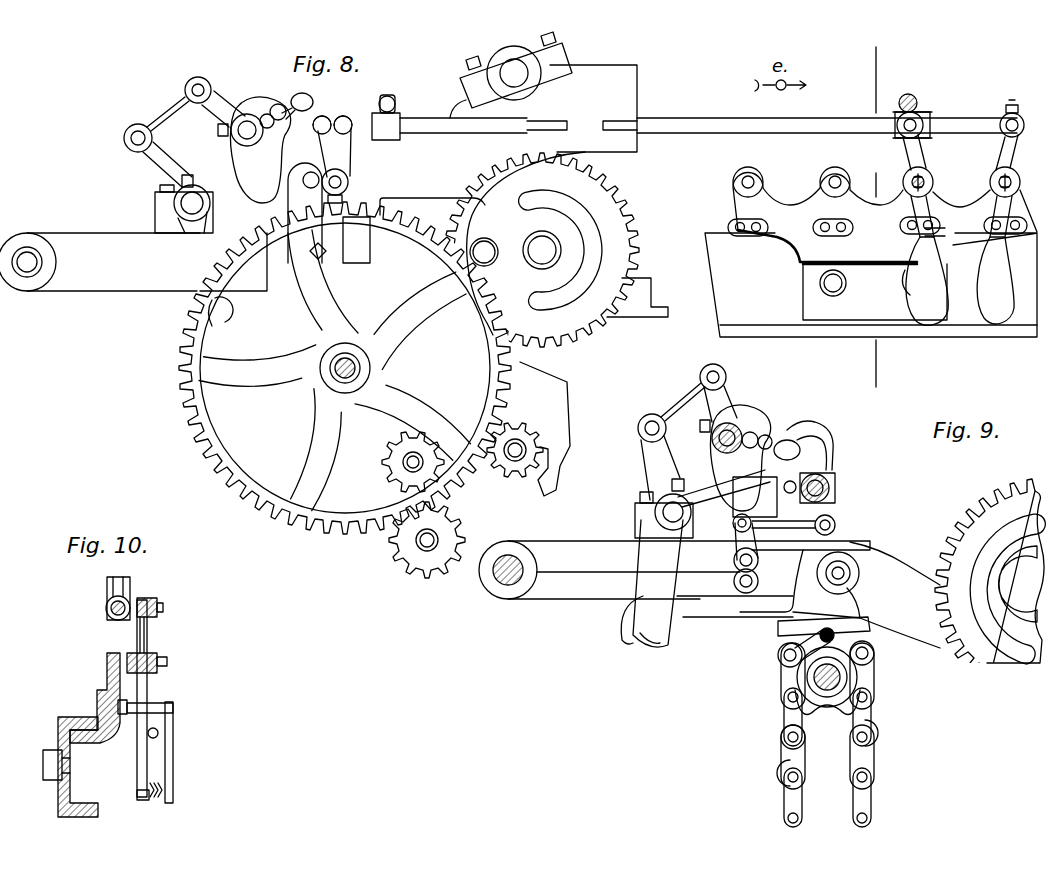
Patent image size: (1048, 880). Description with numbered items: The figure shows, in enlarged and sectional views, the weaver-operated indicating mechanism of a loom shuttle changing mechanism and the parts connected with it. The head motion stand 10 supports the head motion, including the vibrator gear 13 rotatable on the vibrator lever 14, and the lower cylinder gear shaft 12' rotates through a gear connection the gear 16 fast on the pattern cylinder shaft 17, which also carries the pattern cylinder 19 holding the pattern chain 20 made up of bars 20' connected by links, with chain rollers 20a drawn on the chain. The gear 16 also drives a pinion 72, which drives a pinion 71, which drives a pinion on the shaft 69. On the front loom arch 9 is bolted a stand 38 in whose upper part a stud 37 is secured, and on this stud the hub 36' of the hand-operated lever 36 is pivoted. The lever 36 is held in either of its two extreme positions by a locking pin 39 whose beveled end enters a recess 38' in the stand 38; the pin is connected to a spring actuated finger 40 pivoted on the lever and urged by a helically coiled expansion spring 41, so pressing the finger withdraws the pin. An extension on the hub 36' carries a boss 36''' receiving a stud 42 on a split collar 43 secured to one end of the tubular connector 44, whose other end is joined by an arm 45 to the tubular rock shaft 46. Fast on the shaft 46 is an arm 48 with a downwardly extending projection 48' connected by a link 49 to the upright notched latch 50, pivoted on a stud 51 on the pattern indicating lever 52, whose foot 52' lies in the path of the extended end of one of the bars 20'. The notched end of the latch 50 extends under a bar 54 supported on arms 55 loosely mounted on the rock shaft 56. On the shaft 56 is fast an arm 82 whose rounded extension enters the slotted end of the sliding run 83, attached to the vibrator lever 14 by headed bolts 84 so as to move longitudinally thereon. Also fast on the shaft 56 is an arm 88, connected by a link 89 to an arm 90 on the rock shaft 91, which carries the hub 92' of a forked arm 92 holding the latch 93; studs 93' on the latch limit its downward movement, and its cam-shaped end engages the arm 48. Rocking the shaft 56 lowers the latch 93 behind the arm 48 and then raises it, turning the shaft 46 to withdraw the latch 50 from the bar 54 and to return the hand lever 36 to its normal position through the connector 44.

In FIG. 9, the loom arch 9 is at (733, 310).
In FIG. 10, the loom arch 9 is at (77, 718).
In FIG. 8, the head motion stand 10 is at (90, 287).
In FIG. 9, the head motion stand 10 is at (483, 615).
In FIG. 8, the lower cylinder gear shaft 12' is at (542, 440).
In FIG. 8, the vibrator gear 13 is at (617, 232).
In FIG. 9, the vibrator gear 13 is at (985, 523).
In FIG. 8, the vibrator lever 14 is at (640, 307).
In FIG. 9, the vibrator lever 14 is at (930, 637).
In FIG. 8, the gear 16 is at (250, 465).
In FIG. 8, the pattern cylinder shaft 17 is at (337, 367).
In FIG. 9, the pattern cylinder shaft 17 is at (812, 678).
In FIG. 9, the pattern cylinder 19 is at (812, 703).
In FIG. 8, the pattern chain 20 is at (391, 471).
In FIG. 9, the pattern chain 20 is at (834, 738).
In FIG. 9, the bars 20' is at (820, 661).
In FIG. 9, the chain roller 20a is at (782, 778).
In FIG. 9, the hand-operated lever 36 is at (940, 260).
In FIG. 10, the hand-operated lever 36 is at (173, 698).
In FIG. 9, the hub 36' is at (961, 178).
In FIG. 10, the hub 36' is at (166, 650).
In FIG. 9, the hub or boss 36''' is at (960, 116).
In FIG. 10, the hub or boss 36''' is at (165, 589).
In FIG. 9, the stud 37 is at (910, 177).
In FIG. 10, the stud 37 is at (167, 664).
In FIG. 9, the stand 38 is at (885, 243).
In FIG. 10, the stand 38 is at (95, 698).
In FIG. 9, the recess or depression 38' is at (877, 234).
In FIG. 10, the recess or depression 38' is at (134, 720).
In FIG. 9, the pin 39 is at (913, 232).
In FIG. 10, the pin 39 is at (160, 705).
In FIG. 9, the spring actuated finger 40 is at (933, 277).
In FIG. 10, the spring actuated finger 40 is at (160, 732).
In FIG. 10, the helically coiled expansion spring 41 is at (158, 798).
In FIG. 9, the stud 42 is at (922, 112).
In FIG. 10, the stud 42 is at (163, 608).
In FIG. 9, the split collar 43 is at (908, 95).
In FIG. 10, the split collar 43 is at (112, 592).
In FIG. 8, the connector 44 is at (417, 123).
In FIG. 9, the connector 44 is at (805, 127).
In FIG. 10, the connector 44 is at (108, 612).
In FIG. 8, the arm 45 is at (323, 140).
In FIG. 9, the rock shaft 46 is at (828, 482).
In FIG. 9, the arm 48 is at (810, 431).
In FIG. 9, the downwardly extending projection 48' is at (829, 491).
In FIG. 9, the link 49 is at (777, 527).
In FIG. 9, the upright latch 50 is at (754, 531).
In FIG. 9, the stud 51 is at (760, 560).
In FIG. 9, the pattern indicating lever 52 is at (780, 600).
In FIG. 9, the foot 52' is at (788, 644).
In FIG. 9, the bar 54 is at (755, 489).
In FIG. 9, the arms 55 is at (708, 492).
In FIG. 8, the rock shaft 56 is at (173, 203).
In FIG. 9, the rock shaft 56 is at (665, 512).
In FIG. 8, the shaft 69 is at (405, 462).
In FIG. 8, the pinion 71 is at (390, 553).
In FIG. 8, the pinion 72 is at (433, 557).
In FIG. 8, the arm 82 is at (195, 225).
In FIG. 9, the arm 82 is at (657, 562).
In FIG. 9, the sliding run 83 is at (633, 613).
In FIG. 9, the headed bolts 84 is at (845, 562).
In FIG. 8, the arm 88 is at (148, 160).
In FIG. 9, the arm 88 is at (652, 450).
In FIG. 8, the link 89 is at (173, 118).
In FIG. 9, the link 89 is at (680, 402).
In FIG. 8, the arm 90 is at (213, 92).
In FIG. 9, the arm 90 is at (722, 388).
In FIG. 8, the rock shaft 91 is at (218, 133).
In FIG. 9, the rock shaft 91 is at (712, 440).
In FIG. 8, the forked arm 92 is at (260, 138).
In FIG. 9, the forked arm 92 is at (740, 449).
In FIG. 9, the hub 92' is at (693, 423).
In FIG. 8, the latch or pawl 93 is at (288, 124).
In FIG. 9, the latch or pawl 93 is at (765, 428).
In FIG. 8, the projection or stud 93' is at (275, 134).
In FIG. 9, the projection or stud 93' is at (753, 455).